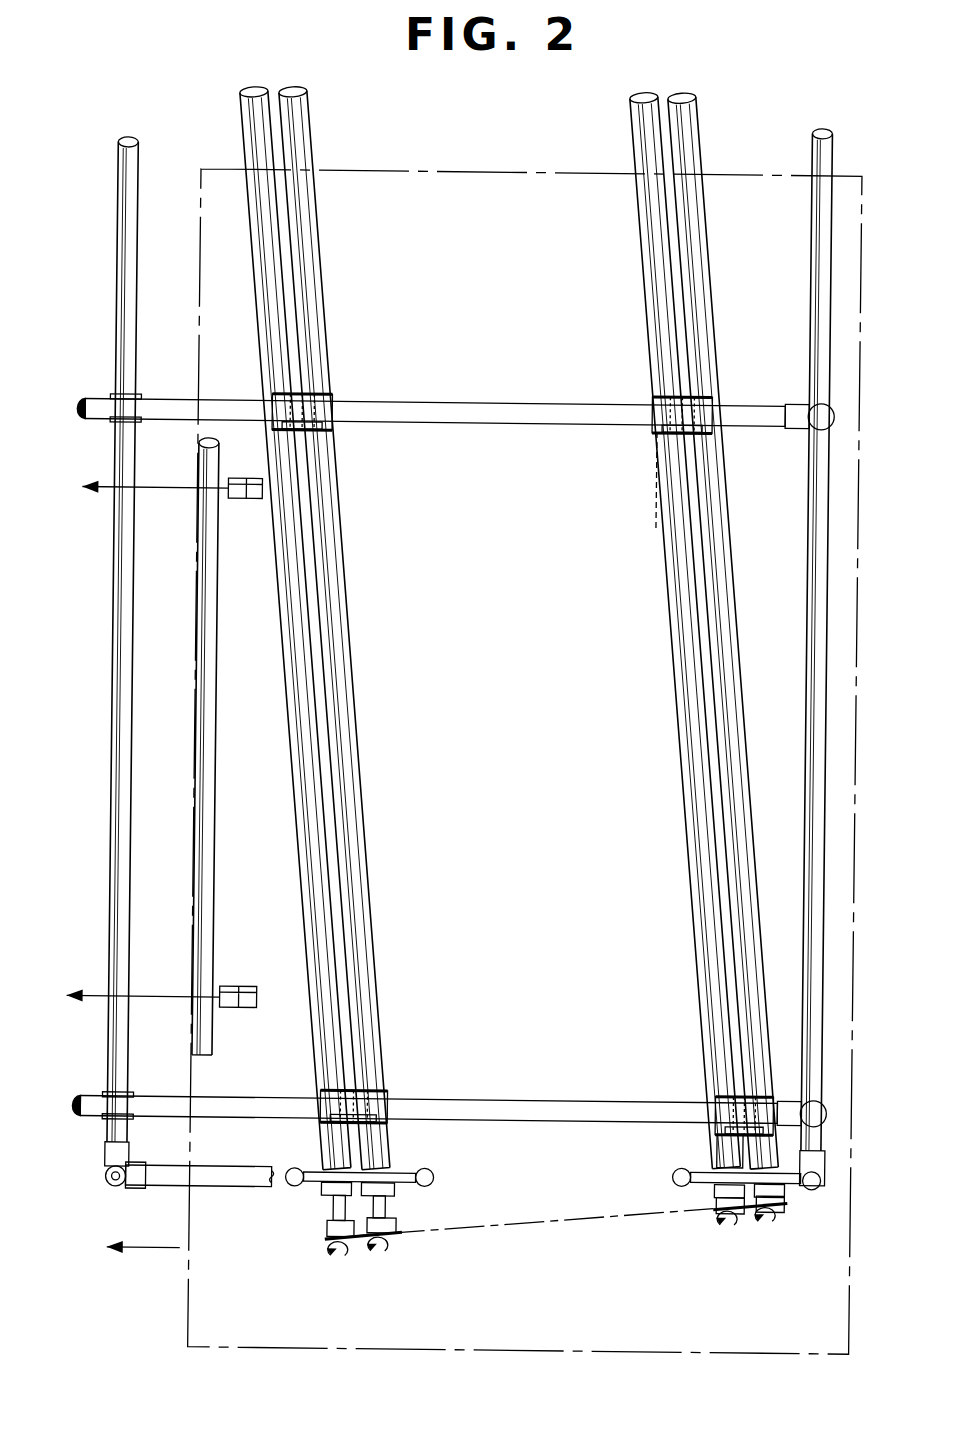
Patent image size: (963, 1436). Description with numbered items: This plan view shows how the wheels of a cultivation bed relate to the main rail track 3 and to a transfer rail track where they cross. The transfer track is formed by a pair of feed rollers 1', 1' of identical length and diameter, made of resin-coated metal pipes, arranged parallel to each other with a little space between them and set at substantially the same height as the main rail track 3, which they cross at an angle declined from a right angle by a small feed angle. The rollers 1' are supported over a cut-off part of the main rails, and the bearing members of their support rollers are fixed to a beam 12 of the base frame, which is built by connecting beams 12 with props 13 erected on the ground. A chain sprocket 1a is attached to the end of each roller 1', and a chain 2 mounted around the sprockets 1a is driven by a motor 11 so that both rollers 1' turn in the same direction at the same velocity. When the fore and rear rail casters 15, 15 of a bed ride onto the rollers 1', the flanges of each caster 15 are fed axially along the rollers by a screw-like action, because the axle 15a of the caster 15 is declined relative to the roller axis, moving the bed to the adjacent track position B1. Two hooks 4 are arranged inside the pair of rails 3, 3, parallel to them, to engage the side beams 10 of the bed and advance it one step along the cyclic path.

The feed roller 1' is at (508, 630).
The chain sprocket 1a is at (333, 1240).
The chain 2 is at (614, 1217).
The main rail track 3 is at (439, 401).
The hook 4 is at (245, 481).
The side beam 10 is at (210, 665).
The motor 11 is at (735, 1142).
The beam 12 is at (264, 1194).
The prop 13 is at (133, 1166).
The rail caster 15 is at (314, 398).
The axle 15a is at (294, 436).
The cultivation bed position B1 is at (640, 1320).